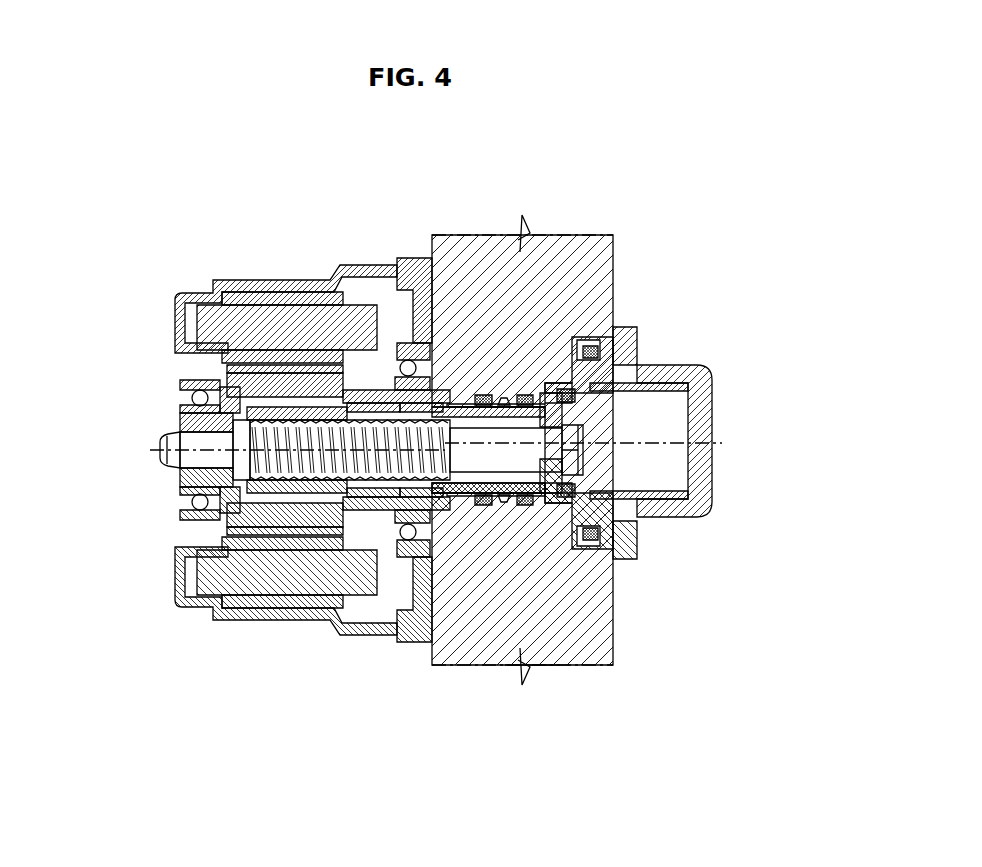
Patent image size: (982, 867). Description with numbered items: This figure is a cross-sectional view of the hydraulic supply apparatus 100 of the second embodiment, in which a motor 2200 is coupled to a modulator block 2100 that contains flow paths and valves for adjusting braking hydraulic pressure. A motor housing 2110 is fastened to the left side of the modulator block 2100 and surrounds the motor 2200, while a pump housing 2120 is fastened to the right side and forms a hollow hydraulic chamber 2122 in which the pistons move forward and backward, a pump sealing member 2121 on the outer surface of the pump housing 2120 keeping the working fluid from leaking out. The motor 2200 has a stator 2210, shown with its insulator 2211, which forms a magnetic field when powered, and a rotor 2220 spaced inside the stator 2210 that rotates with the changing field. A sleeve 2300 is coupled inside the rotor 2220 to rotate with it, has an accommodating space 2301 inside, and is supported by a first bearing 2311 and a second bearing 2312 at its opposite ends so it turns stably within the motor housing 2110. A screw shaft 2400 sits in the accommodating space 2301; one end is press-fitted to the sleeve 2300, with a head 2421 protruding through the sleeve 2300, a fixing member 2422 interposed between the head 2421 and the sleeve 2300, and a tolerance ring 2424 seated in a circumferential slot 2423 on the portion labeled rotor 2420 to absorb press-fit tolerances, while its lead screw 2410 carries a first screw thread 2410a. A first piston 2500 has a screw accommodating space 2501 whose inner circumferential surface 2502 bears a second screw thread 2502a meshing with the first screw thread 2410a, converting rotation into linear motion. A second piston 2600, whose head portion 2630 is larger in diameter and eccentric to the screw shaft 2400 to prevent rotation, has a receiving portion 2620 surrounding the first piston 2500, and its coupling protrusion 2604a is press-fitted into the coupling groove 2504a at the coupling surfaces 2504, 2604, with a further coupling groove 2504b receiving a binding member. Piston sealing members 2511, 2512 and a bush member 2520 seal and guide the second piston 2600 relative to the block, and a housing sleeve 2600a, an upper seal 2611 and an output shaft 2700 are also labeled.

The hydraulic supply apparatus 100 is at (326, 166).
The modulator block 2100 is at (600, 632).
The motor housing 2110 is at (338, 270).
The pump housing 2120 is at (693, 515).
The pump sealing member 2121 is at (598, 543).
The hydraulic chamber 2122 is at (655, 473).
The motor 2200 is at (107, 312).
The stator 2210 is at (200, 327).
The insulator 2211 is at (222, 357).
The rotor 2220 is at (190, 360).
The sleeve 2300 is at (182, 420).
The accommodating space 2301 is at (165, 440).
The first bearing 2311 is at (182, 395).
The second bearing 2312 is at (407, 325).
The screw shaft 2400 is at (247, 722).
The lead screw 2410 is at (300, 493).
The first screw thread 2410a is at (365, 497).
The rotor 2420 is at (240, 676).
The head 2421 is at (230, 535).
The fixing member 2422 is at (250, 522).
The slot 2423 is at (285, 520).
The tolerance ring 2424 is at (330, 508).
The first piston 2500 is at (432, 640).
The screw accommodating space 2501 is at (400, 493).
The inner circumferential surface 2502 is at (360, 497).
The second screw thread 2502a is at (405, 495).
The coupling surface 2504 is at (527, 645).
The coupling groove 2504a is at (521, 662).
The coupling groove 2504b is at (490, 493).
The piston sealing member 2511 is at (505, 398).
The piston sealing member 2512 is at (527, 395).
The bush member 2520 is at (483, 395).
The second piston 2600 is at (600, 398).
The housing sleeve 2600a is at (655, 389).
The coupling surface 2604 is at (570, 430).
The coupling protrusion 2604a is at (583, 452).
The upper seal 2611 is at (598, 346).
The receiving portion 2620 is at (568, 389).
The head portion 2630 is at (618, 330).
The output shaft 2700 is at (583, 466).